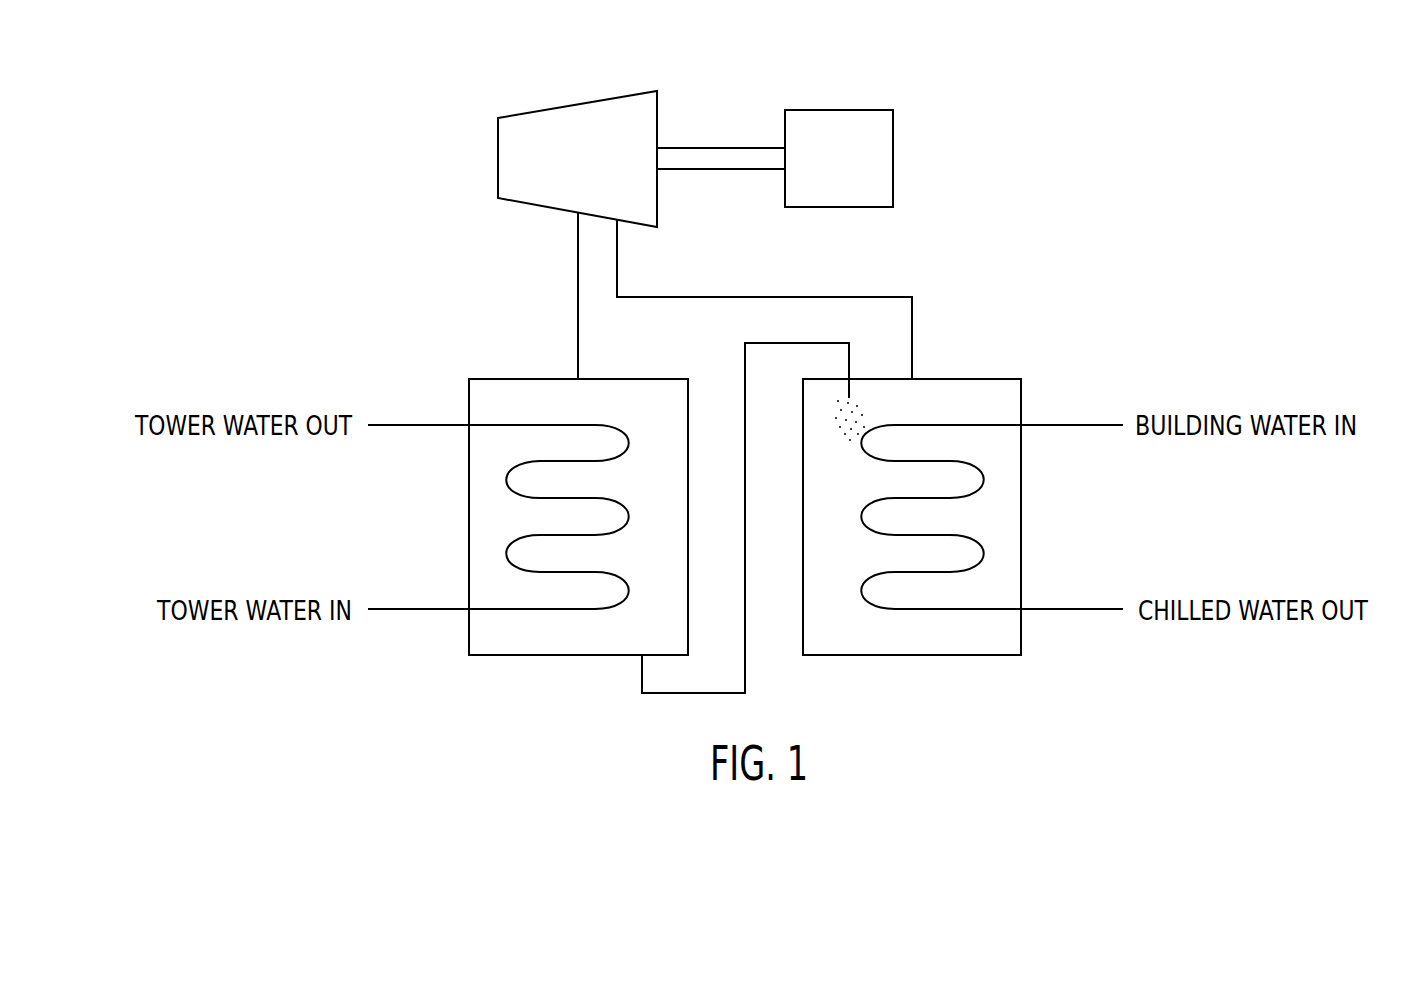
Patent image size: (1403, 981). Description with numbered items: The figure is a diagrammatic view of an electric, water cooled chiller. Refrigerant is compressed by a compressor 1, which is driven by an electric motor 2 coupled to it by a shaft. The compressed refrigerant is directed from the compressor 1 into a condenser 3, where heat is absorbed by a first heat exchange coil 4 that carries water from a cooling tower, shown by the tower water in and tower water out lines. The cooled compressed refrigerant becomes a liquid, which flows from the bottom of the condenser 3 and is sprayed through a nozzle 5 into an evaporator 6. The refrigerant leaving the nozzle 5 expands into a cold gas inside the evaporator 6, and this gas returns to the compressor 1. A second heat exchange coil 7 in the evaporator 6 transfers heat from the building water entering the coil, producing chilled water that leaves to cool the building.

The compressor 1 is at (578, 104).
The electric motor 2 is at (841, 110).
The condenser 3 is at (521, 379).
The heat exchange coil 4 is at (605, 426).
The nozzle 5 is at (858, 405).
The evaporator 6 is at (967, 379).
The heat exchange coil 7 is at (973, 540).